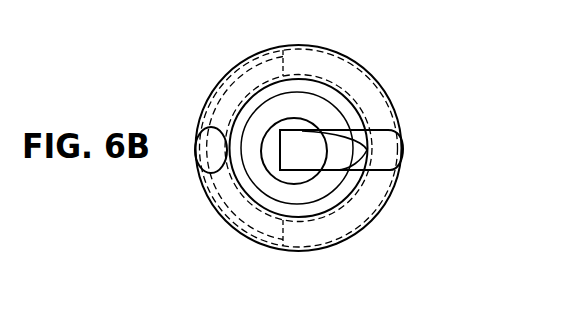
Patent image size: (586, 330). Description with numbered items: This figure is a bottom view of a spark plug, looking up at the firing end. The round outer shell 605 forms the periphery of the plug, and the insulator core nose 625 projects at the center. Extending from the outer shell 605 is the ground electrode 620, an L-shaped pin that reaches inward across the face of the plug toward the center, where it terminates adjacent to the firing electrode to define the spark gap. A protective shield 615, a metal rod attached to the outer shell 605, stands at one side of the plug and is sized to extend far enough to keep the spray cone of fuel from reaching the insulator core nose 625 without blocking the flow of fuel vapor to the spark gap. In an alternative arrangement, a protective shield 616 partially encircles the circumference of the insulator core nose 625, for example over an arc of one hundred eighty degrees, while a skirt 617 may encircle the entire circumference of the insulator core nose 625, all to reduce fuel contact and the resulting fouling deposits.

The outer shell 605 is at (367, 225).
The protective shield 615 is at (196, 150).
The protective shield 616 is at (304, 248).
The skirt 617 is at (387, 100).
The ground electrode 620 is at (392, 158).
The insulator core nose 625 is at (314, 118).